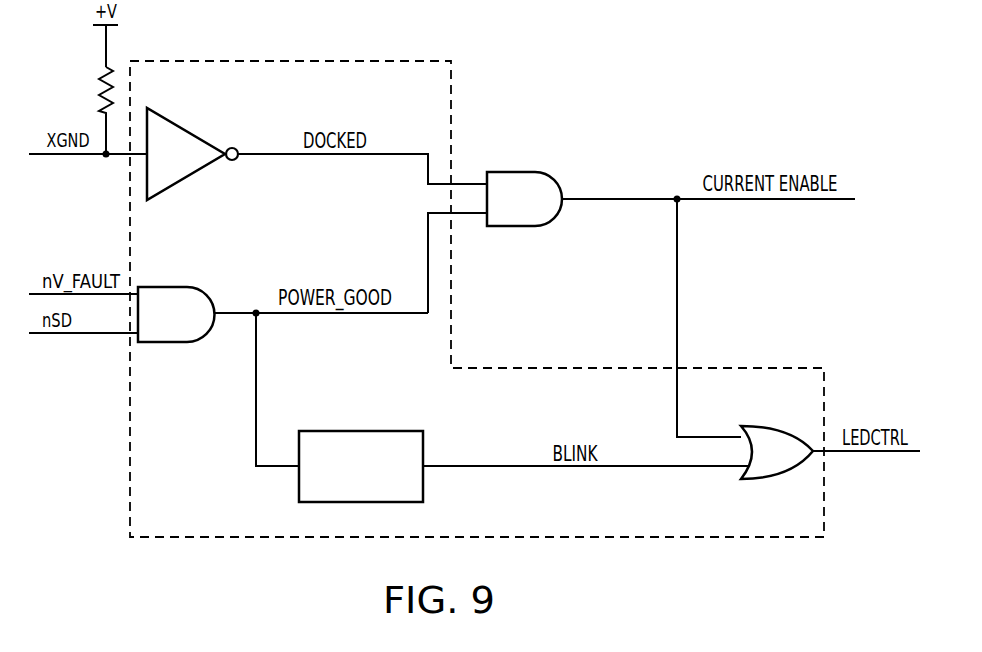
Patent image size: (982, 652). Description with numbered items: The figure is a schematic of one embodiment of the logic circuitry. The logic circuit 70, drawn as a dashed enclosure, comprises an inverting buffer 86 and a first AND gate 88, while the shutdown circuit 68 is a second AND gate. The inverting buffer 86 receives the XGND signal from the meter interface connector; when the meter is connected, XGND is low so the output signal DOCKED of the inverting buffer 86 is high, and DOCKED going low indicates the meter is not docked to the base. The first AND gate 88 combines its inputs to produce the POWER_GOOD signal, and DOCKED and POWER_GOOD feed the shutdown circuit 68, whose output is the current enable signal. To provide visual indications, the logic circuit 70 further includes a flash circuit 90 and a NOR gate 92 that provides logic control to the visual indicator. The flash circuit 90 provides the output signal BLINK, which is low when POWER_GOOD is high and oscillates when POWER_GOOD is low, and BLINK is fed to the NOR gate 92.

The logic circuit 70 is at (378, 60).
The inverting buffer 86 is at (188, 132).
The shutdown circuit 68 is at (528, 172).
The first AND gate 88 is at (185, 287).
The flash circuit 90 is at (385, 431).
The NOR gate 92 is at (748, 425).